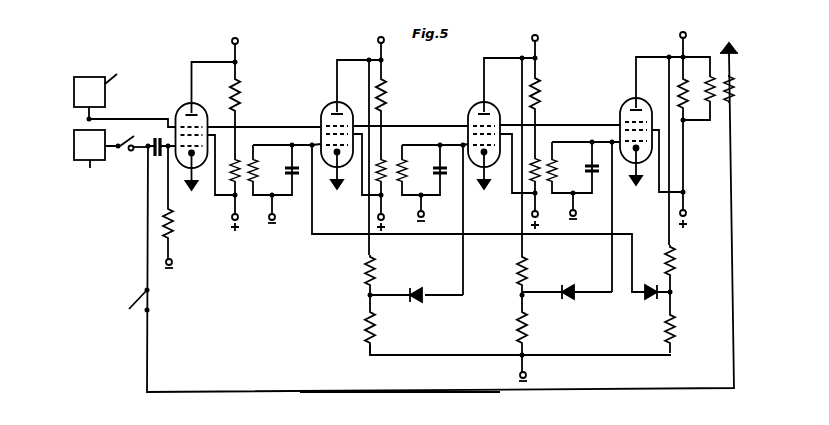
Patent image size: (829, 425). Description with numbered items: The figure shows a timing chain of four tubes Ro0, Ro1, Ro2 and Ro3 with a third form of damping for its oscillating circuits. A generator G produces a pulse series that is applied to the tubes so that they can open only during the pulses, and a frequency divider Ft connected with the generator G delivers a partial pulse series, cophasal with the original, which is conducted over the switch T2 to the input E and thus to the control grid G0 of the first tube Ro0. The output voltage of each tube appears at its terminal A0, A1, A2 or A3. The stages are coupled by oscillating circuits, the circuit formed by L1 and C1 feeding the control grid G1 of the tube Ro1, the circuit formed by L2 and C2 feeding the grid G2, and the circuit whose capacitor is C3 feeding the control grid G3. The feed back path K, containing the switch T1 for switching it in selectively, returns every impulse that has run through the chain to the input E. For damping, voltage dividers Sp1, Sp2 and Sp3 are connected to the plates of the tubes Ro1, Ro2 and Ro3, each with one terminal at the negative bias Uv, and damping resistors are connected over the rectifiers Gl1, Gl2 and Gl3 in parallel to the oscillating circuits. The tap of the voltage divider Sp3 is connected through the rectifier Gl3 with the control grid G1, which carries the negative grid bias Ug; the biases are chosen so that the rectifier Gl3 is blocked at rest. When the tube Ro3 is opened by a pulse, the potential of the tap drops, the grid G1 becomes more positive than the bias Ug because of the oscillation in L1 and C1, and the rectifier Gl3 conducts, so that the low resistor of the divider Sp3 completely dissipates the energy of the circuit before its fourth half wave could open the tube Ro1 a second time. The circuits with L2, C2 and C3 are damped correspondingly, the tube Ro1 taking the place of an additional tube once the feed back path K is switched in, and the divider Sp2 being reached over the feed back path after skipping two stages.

The generator G is at (104, 93).
The frequency divider Ft is at (67, 165).
The switch T1 is at (129, 302).
The switch T2 is at (131, 140).
The input E is at (158, 142).
The first tube Ro0 is at (192, 128).
The tube Ro1 is at (336, 127).
The tube Ro2 is at (488, 125).
The tube Ro3 is at (651, 124).
The terminal A0 is at (243, 128).
The terminal A1 is at (379, 127).
The terminal A2 is at (532, 126).
The terminal A3 is at (691, 124).
The control grid G0 is at (185, 179).
The control grid G1 is at (323, 146).
The grid G2 is at (472, 146).
The control grid G3 is at (627, 141).
The inductance of oscillating circuit L1C1 L1 is at (420, 168).
The inductance of oscillating circuit L2C2 L2 is at (418, 170).
The capacitor of oscillating circuit L1C1 C1 is at (297, 169).
The capacitor of oscillating circuit L2C2 C2 is at (446, 168).
The capacitor of oscillating circuit L3C3 C3 is at (597, 166).
The voltage divider Sp1 is at (359, 207).
The voltage divider Sp2 is at (510, 215).
The voltage divider Sp3 is at (684, 205).
The rectifier Gl1 is at (416, 286).
The rectifier Gl2 is at (567, 284).
The rectifier Gl3 is at (654, 284).
The negative grid bias Ug is at (381, 210).
The negative bias Uv is at (535, 376).
The feed back path K is at (400, 383).